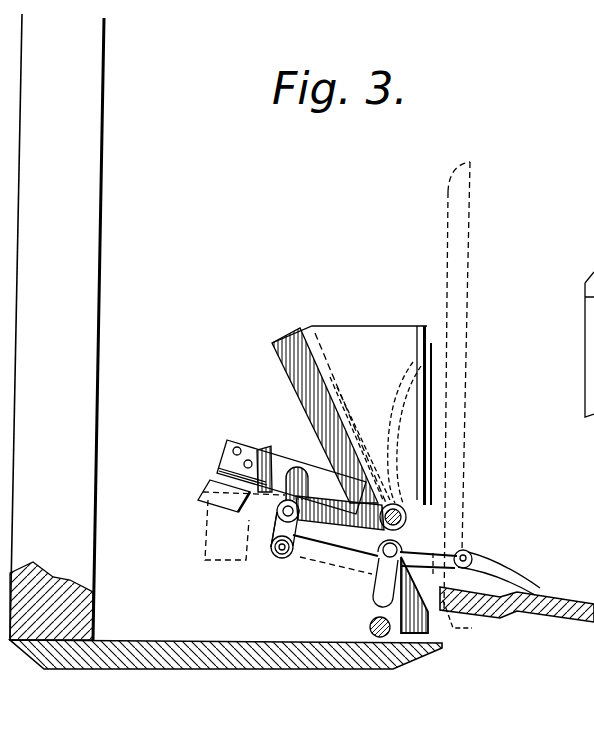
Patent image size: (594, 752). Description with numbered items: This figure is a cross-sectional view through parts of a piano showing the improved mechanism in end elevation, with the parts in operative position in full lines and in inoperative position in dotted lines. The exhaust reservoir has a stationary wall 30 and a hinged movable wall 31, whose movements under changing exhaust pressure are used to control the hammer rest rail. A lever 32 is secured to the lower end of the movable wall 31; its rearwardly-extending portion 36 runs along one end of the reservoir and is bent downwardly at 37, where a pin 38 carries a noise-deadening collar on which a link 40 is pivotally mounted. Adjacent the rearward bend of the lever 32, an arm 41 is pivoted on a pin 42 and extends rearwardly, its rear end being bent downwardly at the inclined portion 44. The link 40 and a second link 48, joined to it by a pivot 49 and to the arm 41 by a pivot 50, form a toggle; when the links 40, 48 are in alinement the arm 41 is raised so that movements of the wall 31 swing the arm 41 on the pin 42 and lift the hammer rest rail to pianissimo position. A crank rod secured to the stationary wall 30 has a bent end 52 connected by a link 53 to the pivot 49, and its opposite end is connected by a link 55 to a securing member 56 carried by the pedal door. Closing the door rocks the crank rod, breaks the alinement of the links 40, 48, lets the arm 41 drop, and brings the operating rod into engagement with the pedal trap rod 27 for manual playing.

The pedal trap rod 27 is at (370, 627).
The stationary wall of the reservoir 30 is at (296, 342).
The movable wall of the reservoir 31 is at (417, 352).
The lever 32 is at (430, 432).
The rearwardly-extending portion 36 is at (405, 522).
The downwardly bent end 37 is at (340, 546).
The pin 38 is at (276, 557).
The link 40 is at (272, 548).
The arm 41 is at (233, 438).
The pin 42 is at (404, 514).
The downwardly-inclined portion 44 is at (222, 494).
The link 48 is at (276, 468).
The pivot 49 is at (280, 524).
The pivot 50 is at (298, 470).
The bent end of crank rod 52 is at (377, 575).
The link 53 is at (350, 558).
The link 55 is at (420, 543).
The securing member 56 is at (517, 587).